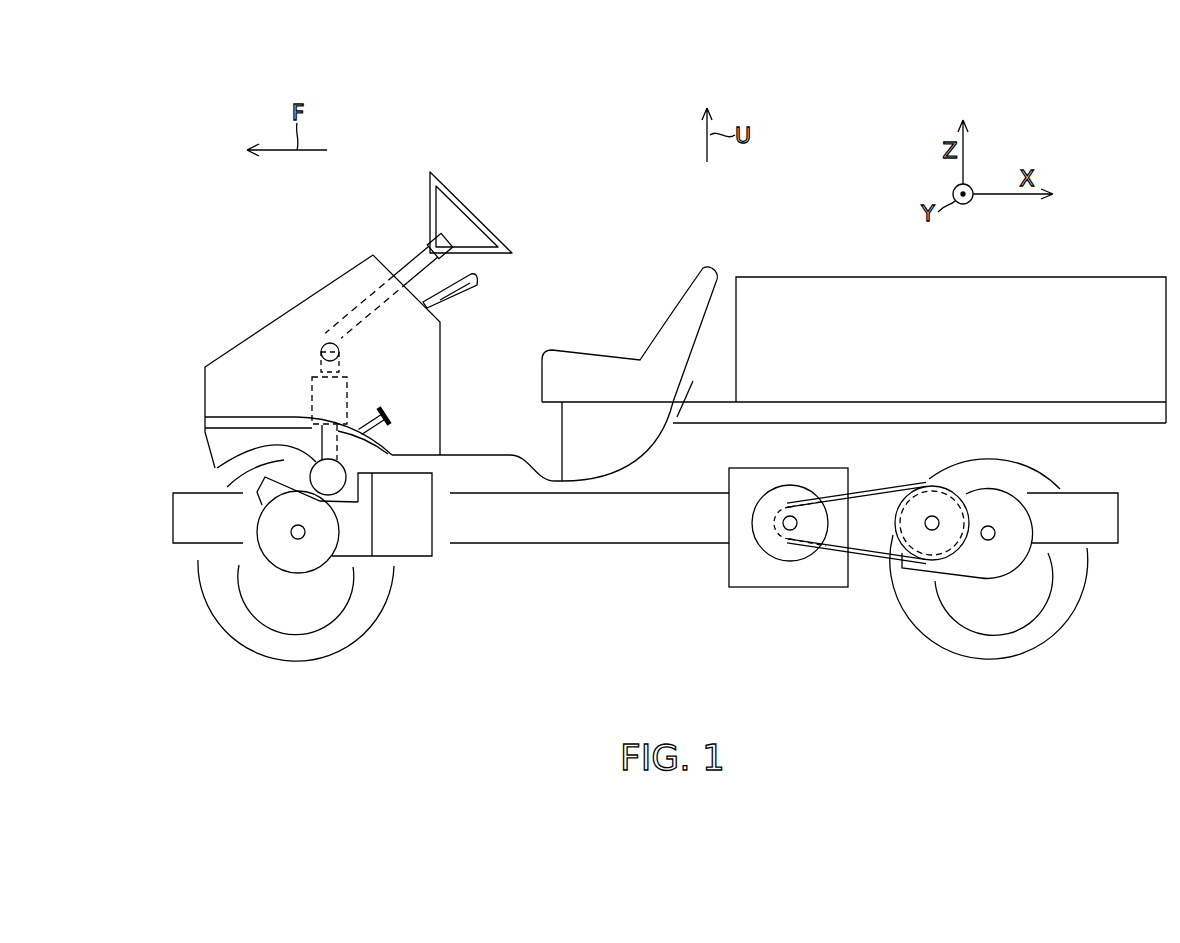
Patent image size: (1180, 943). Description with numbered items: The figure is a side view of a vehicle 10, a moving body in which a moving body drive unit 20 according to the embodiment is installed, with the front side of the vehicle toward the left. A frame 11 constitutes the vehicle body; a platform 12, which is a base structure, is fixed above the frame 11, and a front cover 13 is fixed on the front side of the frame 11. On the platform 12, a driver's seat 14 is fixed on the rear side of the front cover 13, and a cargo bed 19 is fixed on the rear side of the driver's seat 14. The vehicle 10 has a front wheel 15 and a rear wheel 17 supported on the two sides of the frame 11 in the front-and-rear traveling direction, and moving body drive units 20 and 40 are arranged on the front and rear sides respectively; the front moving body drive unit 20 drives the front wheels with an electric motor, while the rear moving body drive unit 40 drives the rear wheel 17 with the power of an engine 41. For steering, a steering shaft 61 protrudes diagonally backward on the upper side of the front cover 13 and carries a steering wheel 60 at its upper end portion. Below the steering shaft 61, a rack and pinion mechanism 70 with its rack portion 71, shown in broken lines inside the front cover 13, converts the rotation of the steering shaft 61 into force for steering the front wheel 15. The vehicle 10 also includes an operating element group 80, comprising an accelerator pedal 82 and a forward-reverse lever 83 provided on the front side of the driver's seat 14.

The vehicle 10 is at (796, 241).
The frame 11 is at (591, 528).
The platform 12 is at (561, 431).
The front cover 13 is at (288, 312).
The driver's seat 14 is at (670, 305).
The front wheel 15 is at (363, 630).
The rear wheel 17 is at (987, 660).
The cargo bed 19 is at (1048, 277).
The moving body drive unit 20 is at (418, 568).
The moving body drive unit 40 is at (770, 599).
The engine 41 is at (820, 590).
The steering wheel 60 is at (460, 193).
The steering shaft 61 is at (410, 258).
The rack and pinion mechanism 70 is at (311, 446).
The rack portion 71 is at (328, 477).
The operating element group 80 is at (490, 287).
The accelerator pedal 82 is at (374, 411).
The forward-reverse lever 83 is at (465, 295).